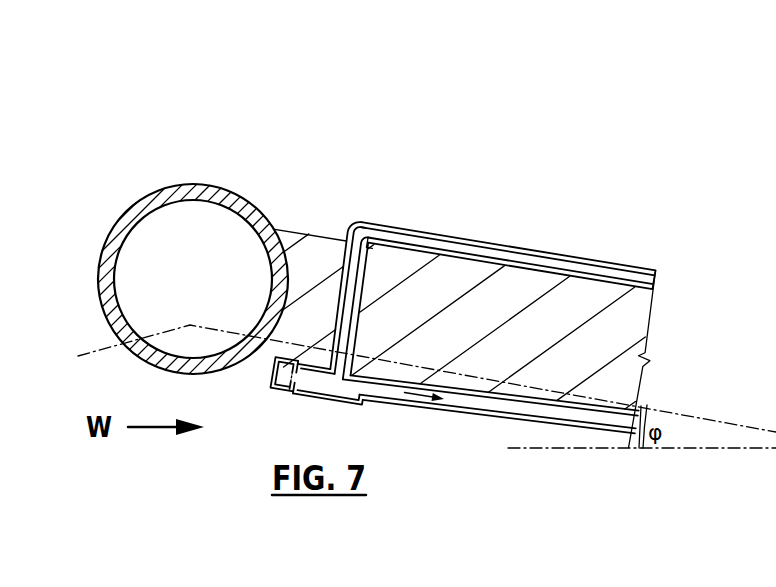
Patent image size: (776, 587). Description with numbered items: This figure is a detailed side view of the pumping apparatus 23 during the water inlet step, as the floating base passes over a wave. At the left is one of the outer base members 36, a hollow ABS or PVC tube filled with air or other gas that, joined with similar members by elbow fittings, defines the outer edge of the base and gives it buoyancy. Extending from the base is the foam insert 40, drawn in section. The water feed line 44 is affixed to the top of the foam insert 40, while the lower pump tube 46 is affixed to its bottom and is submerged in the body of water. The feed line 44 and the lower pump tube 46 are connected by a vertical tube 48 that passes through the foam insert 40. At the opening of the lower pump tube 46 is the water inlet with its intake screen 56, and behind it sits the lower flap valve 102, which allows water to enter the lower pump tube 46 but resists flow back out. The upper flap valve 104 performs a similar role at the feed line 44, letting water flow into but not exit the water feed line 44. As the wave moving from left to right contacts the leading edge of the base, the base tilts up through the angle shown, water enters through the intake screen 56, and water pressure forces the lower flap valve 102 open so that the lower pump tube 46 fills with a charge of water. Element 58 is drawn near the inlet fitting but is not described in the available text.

The pumping apparatus 23 is at (429, 270).
The outer base member 36 is at (172, 196).
The foam insert 40 is at (594, 300).
The water feed line 44 is at (498, 257).
The lower pump tube 46 is at (440, 418).
The vertical tube 48 is at (340, 280).
The intake screen 56 is at (273, 385).
The inlet fitting 58 is at (282, 373).
The lower flap valve 102 is at (297, 388).
The upper flap valve 104 is at (358, 248).